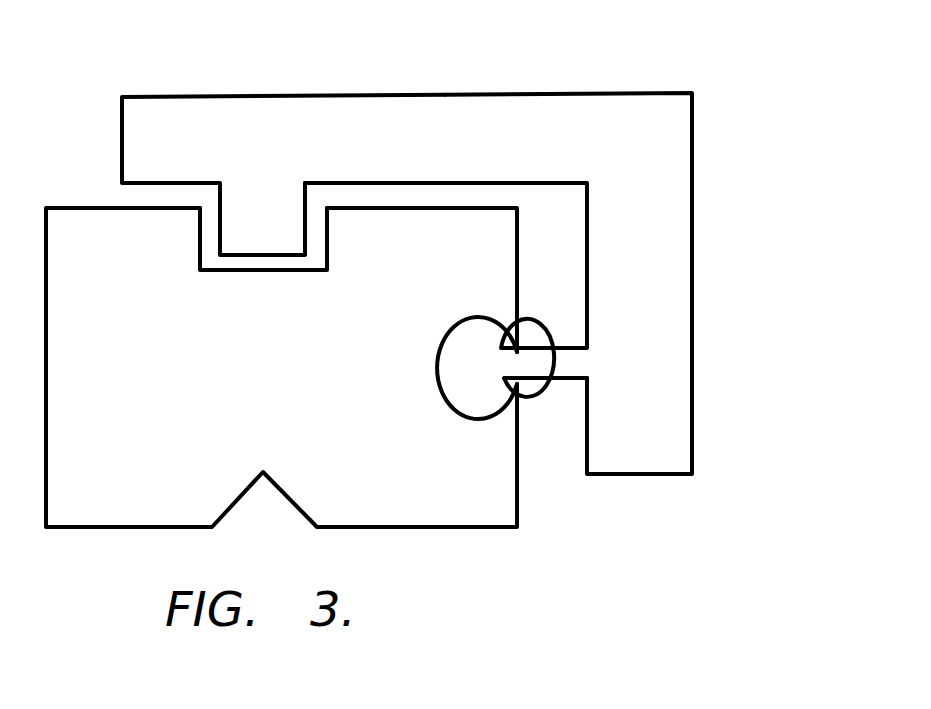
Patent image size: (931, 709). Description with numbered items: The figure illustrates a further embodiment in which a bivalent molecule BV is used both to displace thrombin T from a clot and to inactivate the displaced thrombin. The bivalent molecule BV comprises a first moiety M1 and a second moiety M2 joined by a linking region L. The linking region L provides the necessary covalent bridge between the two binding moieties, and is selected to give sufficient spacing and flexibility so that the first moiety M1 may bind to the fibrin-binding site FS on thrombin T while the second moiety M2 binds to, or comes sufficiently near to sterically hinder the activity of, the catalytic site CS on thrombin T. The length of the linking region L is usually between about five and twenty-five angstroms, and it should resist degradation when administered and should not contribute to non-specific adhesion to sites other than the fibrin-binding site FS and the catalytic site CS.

The bivalent molecule BV is at (462, 254).
The first moiety M1 is at (222, 130).
The linking region L is at (663, 145).
The second moiety M2 is at (660, 396).
The thrombin T is at (281, 367).
The fibrin-binding site FS is at (200, 240).
The catalytic site CS is at (451, 410).